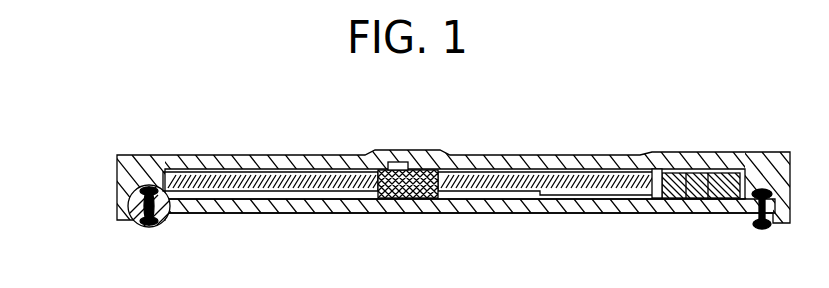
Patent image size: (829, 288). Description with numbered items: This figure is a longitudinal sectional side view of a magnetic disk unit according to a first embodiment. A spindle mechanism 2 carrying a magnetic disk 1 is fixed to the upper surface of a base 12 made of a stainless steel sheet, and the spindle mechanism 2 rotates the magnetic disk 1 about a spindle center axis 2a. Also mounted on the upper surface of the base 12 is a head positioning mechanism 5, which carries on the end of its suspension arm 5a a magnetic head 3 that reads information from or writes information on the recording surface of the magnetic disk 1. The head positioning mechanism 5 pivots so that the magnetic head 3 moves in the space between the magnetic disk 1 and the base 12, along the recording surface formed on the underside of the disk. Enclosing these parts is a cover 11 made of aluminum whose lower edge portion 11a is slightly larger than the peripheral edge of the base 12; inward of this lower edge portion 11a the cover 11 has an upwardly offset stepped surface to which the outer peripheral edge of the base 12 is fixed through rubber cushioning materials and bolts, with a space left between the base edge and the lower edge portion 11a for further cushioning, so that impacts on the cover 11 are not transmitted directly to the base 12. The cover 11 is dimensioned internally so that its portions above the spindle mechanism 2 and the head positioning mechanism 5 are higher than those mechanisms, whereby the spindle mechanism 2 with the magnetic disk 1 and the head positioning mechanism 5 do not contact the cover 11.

The magnetic disk 1 is at (468, 156).
The spindle mechanism 2 is at (393, 203).
The spindle center axis 2a is at (386, 150).
The magnetic head 3 is at (545, 200).
The head positioning mechanism 5 is at (673, 205).
The suspension arm 5a is at (684, 228).
The cover 11 is at (250, 155).
The lower edge portion 11a is at (127, 180).
The base 12 is at (273, 205).